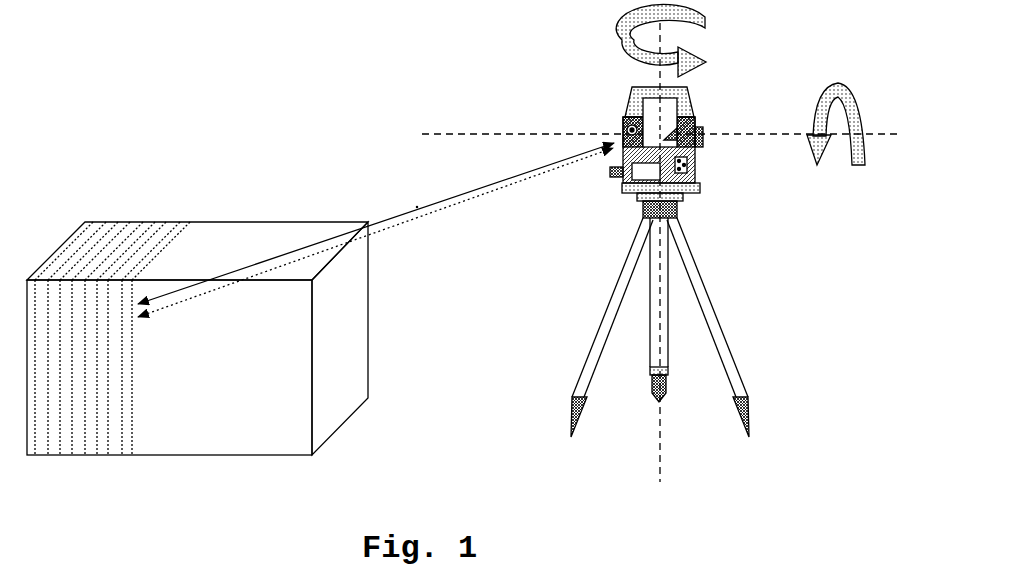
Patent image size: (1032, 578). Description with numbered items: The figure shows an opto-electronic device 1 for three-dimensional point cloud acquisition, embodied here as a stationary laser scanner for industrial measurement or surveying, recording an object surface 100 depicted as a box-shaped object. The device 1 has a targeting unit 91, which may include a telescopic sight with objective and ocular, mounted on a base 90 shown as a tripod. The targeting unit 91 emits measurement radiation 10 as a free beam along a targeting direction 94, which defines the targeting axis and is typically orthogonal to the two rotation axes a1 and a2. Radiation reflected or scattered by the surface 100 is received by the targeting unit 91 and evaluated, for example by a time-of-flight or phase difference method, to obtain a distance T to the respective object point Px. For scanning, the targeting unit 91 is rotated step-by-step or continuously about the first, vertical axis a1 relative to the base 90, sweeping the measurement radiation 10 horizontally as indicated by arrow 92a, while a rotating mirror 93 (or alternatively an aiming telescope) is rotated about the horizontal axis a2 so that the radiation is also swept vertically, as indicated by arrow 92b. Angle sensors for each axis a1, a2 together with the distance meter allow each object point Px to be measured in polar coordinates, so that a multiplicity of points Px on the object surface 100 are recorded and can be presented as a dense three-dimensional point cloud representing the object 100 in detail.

The opto-electronic device 1 is at (650, 151).
The measurement radiation 10 is at (376, 223).
The base 90 is at (702, 249).
The targeting unit 91 is at (612, 118).
The arrow 92a is at (718, 40).
The arrow 92b is at (827, 84).
The rotating mirror 93 is at (698, 175).
The targeting direction 94 is at (377, 235).
The object surface 100 is at (197, 338).
The object point Px is at (110, 370).
The distance T is at (417, 207).
The first rotation axis a1 is at (664, 448).
The second rotation axis a2 is at (727, 140).